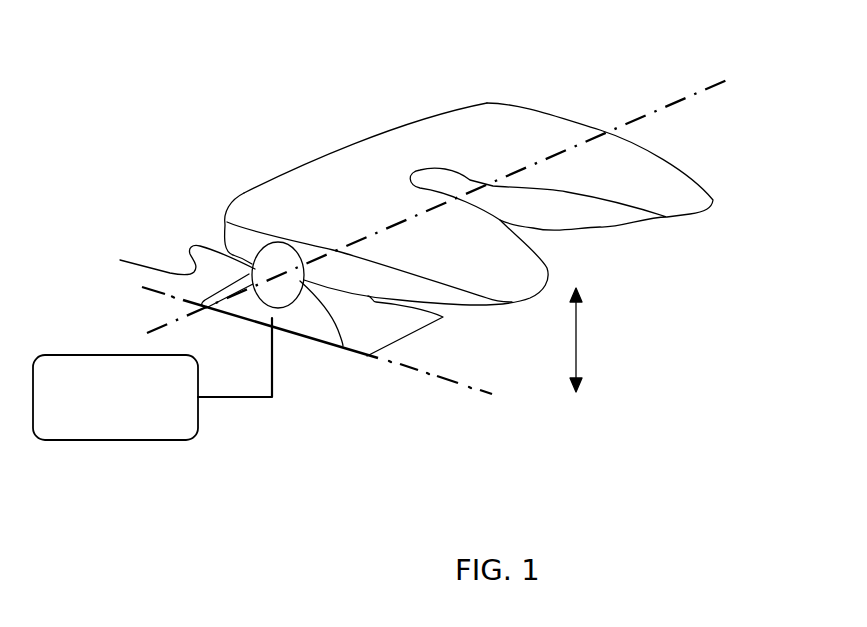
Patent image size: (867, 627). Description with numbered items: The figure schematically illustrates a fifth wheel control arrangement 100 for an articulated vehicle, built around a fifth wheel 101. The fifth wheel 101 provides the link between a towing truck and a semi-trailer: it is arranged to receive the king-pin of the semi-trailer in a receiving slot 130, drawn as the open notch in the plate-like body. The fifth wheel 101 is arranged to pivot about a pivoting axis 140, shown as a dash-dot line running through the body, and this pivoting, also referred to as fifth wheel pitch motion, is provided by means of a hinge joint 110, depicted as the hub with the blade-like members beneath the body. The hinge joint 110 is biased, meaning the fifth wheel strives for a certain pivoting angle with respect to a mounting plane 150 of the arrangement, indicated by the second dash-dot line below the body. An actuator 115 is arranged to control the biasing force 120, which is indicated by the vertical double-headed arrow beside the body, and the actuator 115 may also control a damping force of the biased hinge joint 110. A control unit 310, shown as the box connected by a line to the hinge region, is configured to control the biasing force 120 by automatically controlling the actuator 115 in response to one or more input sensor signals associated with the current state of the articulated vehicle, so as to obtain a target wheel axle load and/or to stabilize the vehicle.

The fifth wheel control arrangement 100 is at (110, 76).
The fifth wheel 101 is at (287, 195).
The hinge joint 110 is at (253, 330).
The actuator 115 is at (302, 312).
The biasing force 120 is at (600, 340).
The receiving slot 130 is at (438, 180).
The pivoting axis 140 is at (441, 189).
The mounting plane 150 is at (332, 340).
The control unit 310 is at (132, 393).